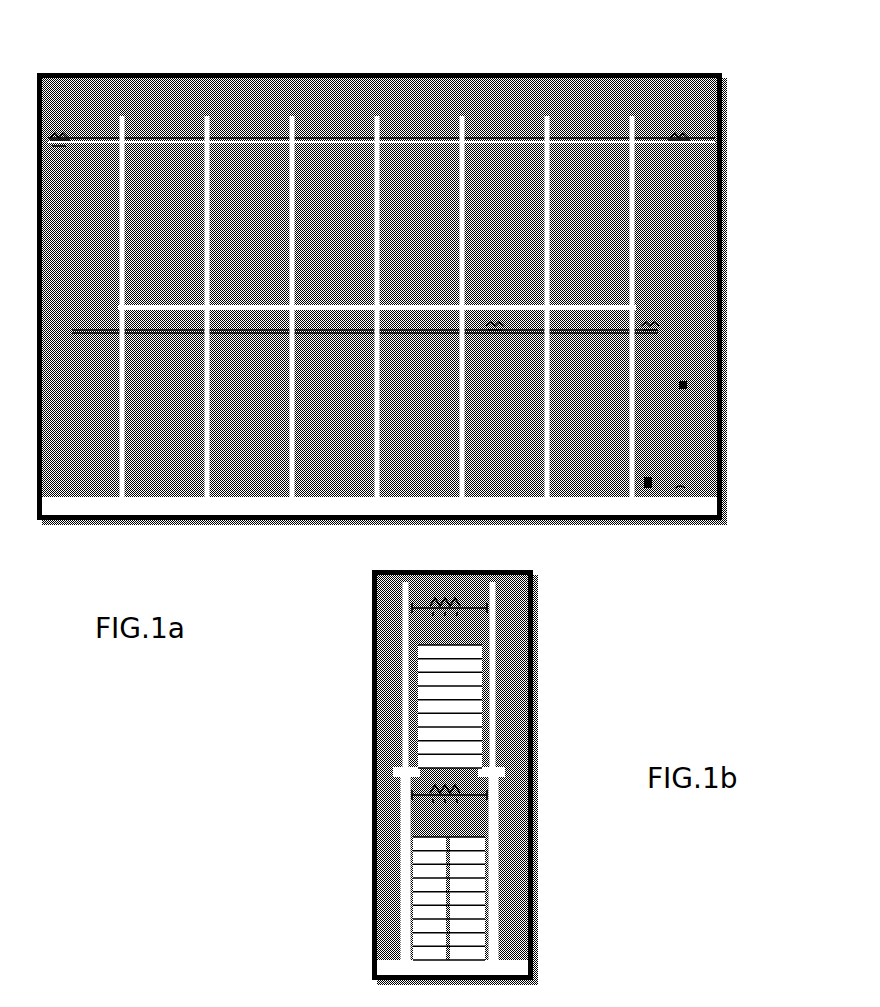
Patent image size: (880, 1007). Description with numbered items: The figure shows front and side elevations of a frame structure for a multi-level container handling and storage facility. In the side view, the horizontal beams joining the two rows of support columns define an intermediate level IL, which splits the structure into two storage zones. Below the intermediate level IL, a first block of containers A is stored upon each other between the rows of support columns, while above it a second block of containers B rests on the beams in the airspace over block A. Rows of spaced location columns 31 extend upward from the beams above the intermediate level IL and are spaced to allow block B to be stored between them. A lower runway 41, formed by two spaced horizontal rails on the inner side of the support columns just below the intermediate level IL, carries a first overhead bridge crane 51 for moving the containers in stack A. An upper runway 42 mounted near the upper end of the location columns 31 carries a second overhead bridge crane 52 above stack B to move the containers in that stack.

In FIG. 1A, the location columns 31 is at (368, 230).
In FIG. 1A, the upper runway 42 is at (548, 121).
In FIG. 1A, the lower runway 41 is at (536, 318).
In FIG. 1A, the upper overhead bridge crane 52 is at (697, 115).
In FIG. 1B, the upper overhead bridge crane 52 is at (424, 624).
In FIG. 1B, the first overhead bridge crane 51 is at (426, 825).
In FIG. 1B, the first block of containers A is at (479, 912).
In FIG. 1B, the second block of containers B is at (471, 725).
In FIG. 1B, the intermediate level IL is at (385, 770).